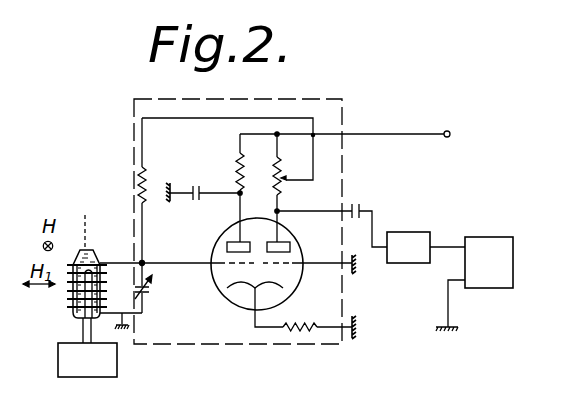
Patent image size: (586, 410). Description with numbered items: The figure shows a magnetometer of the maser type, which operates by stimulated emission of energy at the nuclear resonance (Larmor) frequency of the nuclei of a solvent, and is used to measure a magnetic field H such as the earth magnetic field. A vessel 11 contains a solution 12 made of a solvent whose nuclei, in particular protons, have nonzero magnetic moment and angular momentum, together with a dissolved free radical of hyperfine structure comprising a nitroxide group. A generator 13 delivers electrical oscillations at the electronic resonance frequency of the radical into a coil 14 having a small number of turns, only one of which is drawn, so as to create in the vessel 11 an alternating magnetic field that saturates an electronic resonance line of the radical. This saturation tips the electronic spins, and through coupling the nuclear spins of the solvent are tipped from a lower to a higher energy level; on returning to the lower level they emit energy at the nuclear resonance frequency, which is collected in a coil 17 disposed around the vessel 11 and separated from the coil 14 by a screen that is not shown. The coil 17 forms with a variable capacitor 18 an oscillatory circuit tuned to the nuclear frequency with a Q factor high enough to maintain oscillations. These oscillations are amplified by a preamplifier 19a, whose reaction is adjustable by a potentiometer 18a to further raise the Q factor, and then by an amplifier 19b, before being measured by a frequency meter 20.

The vessel 11 is at (97, 258).
The solution 12 is at (84, 222).
The generator 13 is at (117, 360).
The coil 14 is at (70, 307).
The coil 17 is at (104, 278).
The variable capacitor 18 is at (144, 291).
The potentiometer 18a is at (281, 177).
The preamplifier 19a is at (288, 297).
The amplifier 19b is at (412, 232).
The frequency meter 20 is at (495, 237).